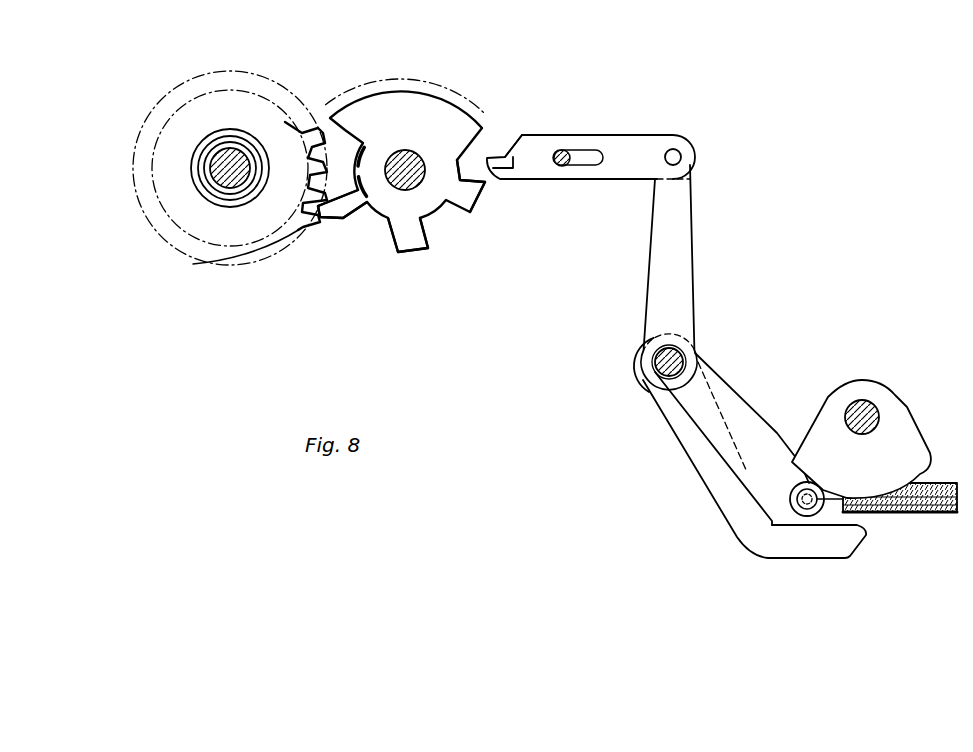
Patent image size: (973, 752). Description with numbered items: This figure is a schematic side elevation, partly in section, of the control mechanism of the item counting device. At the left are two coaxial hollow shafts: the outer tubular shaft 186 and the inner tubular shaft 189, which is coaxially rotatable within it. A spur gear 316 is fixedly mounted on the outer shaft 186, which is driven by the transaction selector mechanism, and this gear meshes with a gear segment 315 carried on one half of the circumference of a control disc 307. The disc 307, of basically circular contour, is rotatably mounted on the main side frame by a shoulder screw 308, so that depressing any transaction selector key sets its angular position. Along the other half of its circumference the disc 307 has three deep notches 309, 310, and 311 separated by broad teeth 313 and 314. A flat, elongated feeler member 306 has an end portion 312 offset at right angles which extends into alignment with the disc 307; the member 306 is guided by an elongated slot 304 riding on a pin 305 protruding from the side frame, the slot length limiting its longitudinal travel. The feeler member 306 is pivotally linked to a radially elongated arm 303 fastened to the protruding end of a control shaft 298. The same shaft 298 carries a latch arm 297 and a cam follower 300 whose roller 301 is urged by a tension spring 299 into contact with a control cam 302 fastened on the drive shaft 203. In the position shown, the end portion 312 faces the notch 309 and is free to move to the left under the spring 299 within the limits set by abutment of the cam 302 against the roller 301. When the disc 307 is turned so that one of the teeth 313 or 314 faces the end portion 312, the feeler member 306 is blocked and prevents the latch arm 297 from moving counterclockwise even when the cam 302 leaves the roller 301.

The tubular shaft 186 is at (222, 207).
The tubular shaft 189 is at (206, 199).
The spur gear 316 is at (249, 228).
The gear segment 315 is at (350, 105).
The control disc 307 is at (421, 218).
The shoulder screw 308 is at (428, 180).
The notch 311 is at (381, 218).
The notch 310 is at (437, 217).
The tooth 314 is at (406, 245).
The tooth 313 is at (468, 188).
The feeler member 306 is at (636, 147).
The end portion 312 is at (504, 154).
The notch 309 is at (462, 163).
The elongated slot 304 is at (593, 165).
The pin 305 is at (562, 165).
The radially elongated arm 303 is at (662, 294).
The control shaft 298 is at (665, 370).
The cam follower 300 is at (767, 470).
The latch arm 297 is at (830, 549).
The roller 301 is at (809, 504).
The tension spring 299 is at (920, 513).
The control cam 302 is at (904, 443).
The drive shaft 203 is at (872, 410).